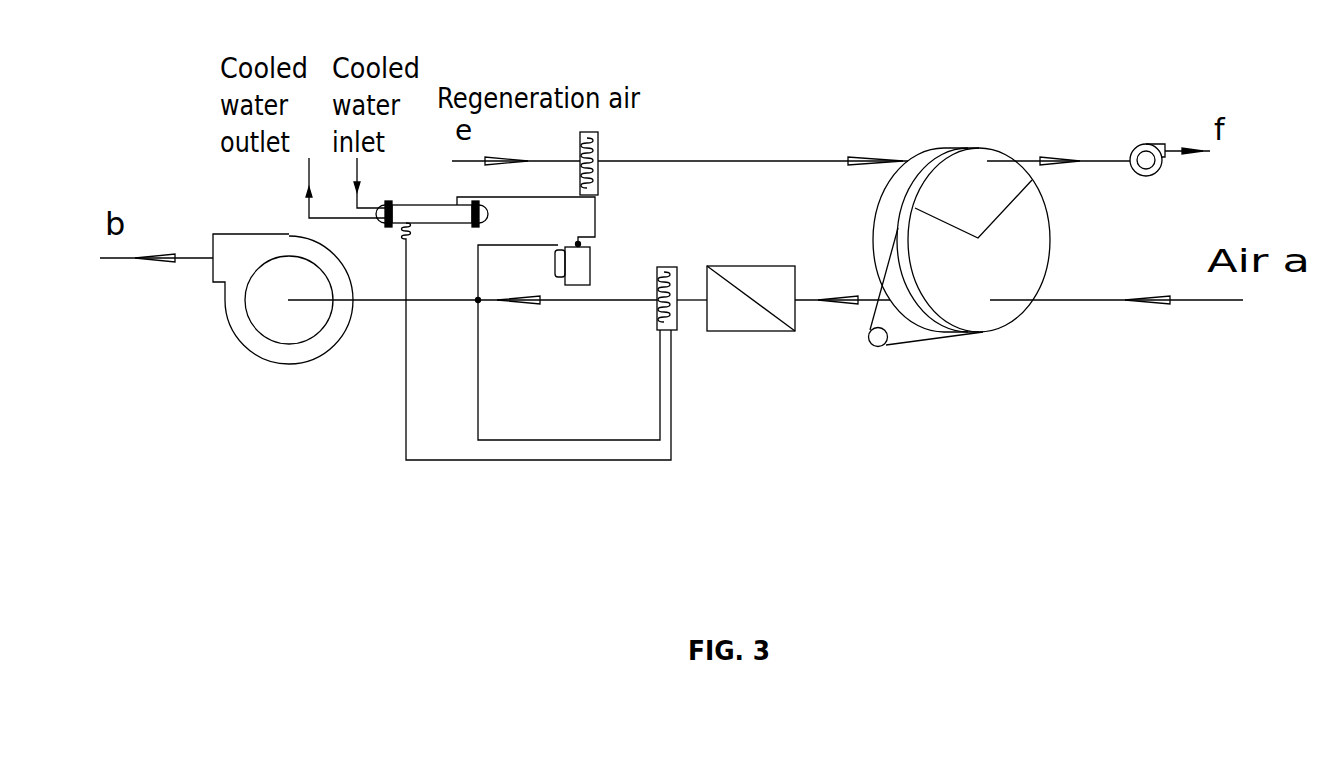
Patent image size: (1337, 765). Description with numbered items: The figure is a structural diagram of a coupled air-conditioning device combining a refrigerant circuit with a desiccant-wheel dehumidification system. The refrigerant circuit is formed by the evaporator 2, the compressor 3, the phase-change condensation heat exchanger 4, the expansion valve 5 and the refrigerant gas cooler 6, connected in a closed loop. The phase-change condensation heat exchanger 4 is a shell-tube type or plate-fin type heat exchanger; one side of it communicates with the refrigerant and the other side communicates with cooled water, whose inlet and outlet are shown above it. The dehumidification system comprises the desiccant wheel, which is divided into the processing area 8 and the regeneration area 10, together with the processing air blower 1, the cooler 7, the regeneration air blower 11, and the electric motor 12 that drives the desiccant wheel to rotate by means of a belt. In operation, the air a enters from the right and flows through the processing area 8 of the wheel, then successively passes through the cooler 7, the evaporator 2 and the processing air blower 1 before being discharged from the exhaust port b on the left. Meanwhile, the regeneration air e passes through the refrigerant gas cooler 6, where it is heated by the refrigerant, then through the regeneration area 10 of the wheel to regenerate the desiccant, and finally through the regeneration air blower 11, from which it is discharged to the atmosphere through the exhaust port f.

The processing air blower 1 is at (268, 318).
The evaporator 2 is at (662, 267).
The compressor 3 is at (578, 265).
The phase-change condensation heat exchanger 4 is at (420, 213).
The expansion valve 5 is at (407, 242).
The refrigerant gas cooler 6 is at (595, 132).
The cooler level-2 7 is at (733, 312).
The processing area level-2 8 is at (973, 285).
The regeneration area level-2 10 is at (972, 182).
The regeneration air blower level-2 11 is at (1152, 145).
The electric motor 12 is at (878, 337).